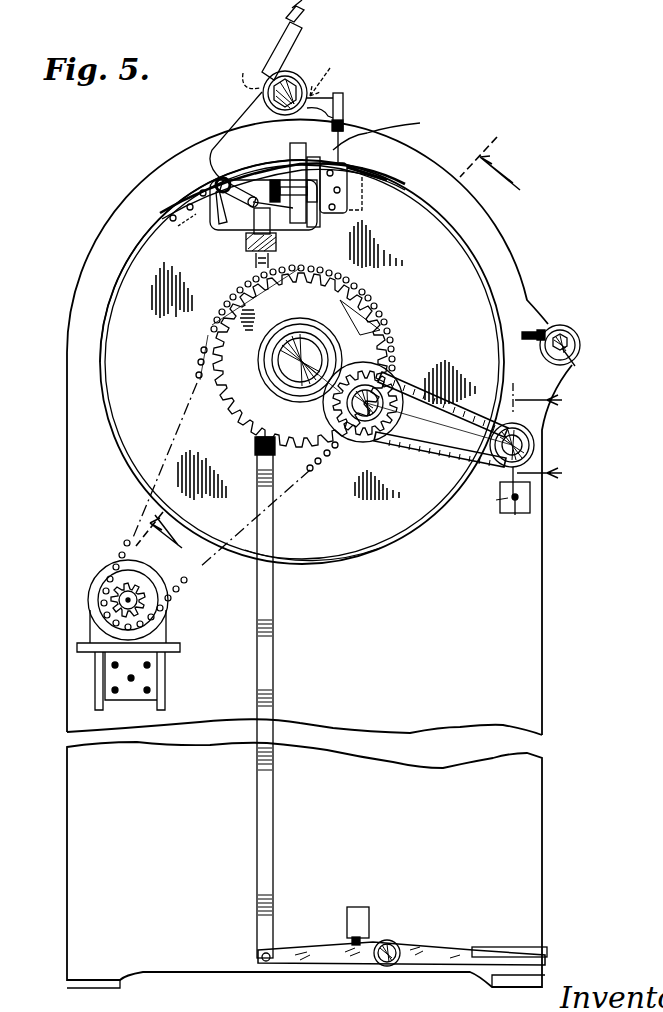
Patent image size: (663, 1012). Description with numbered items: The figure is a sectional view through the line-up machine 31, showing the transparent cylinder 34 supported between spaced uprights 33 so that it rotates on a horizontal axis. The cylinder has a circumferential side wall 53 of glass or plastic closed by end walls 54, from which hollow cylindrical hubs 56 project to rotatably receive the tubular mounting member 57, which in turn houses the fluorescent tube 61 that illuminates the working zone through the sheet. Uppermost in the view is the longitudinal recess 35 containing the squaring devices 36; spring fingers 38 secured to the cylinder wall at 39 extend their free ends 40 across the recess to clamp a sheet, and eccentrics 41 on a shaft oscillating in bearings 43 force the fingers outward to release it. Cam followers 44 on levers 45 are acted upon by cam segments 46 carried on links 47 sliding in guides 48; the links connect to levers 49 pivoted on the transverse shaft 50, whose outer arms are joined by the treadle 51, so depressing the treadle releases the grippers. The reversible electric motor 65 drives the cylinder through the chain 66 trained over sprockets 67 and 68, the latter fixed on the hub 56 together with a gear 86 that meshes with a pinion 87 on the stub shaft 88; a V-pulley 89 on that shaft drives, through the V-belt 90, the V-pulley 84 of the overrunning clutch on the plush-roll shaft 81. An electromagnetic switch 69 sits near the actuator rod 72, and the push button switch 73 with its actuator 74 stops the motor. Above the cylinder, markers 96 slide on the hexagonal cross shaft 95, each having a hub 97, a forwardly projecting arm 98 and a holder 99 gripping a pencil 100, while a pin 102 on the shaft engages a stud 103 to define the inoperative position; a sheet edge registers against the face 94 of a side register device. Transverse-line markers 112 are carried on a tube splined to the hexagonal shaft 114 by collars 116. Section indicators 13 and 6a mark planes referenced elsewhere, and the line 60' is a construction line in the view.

The section line 13 is at (551, 443).
The line-up machine 31 is at (522, 238).
The uprights 33 is at (67, 350).
The cylinder 34 is at (110, 286).
The longitudinal recess 35 is at (252, 175).
The squaring devices 36 is at (314, 160).
The spring fingers 38 is at (218, 178).
The securing point of spring fingers 39 is at (172, 198).
The free ends of spring fingers 40 is at (345, 190).
The eccentrics 41 is at (226, 182).
The bearings 43 is at (218, 198).
The cam followers 44 is at (252, 212).
The levers 45 is at (278, 178).
The cam segments 46 is at (316, 208).
The links 47 is at (252, 270).
The guides 48 is at (280, 246).
The levers 49 is at (420, 945).
The transverse shaft 50 is at (390, 966).
The treadle 51 is at (512, 945).
The circumferential side wall 53 is at (400, 545).
The end walls 54 is at (375, 548).
The hollow cylindrical hubs 56 is at (268, 372).
The tubular mounting member 57 is at (308, 330).
The gear center line 60' is at (321, 398).
The fluorescent tube 61 is at (292, 320).
The reversible electric motor 65 is at (96, 580).
The chain 66 is at (200, 368).
The sprocket 67 is at (142, 588).
The sprocket 68 is at (356, 312).
The electromagnetic switch 69 is at (500, 502).
The actuator rod 72 is at (516, 514).
The push button switch 73 is at (358, 908).
The actuator 74 is at (362, 940).
The shaft 81 is at (503, 484).
The V-pulley 84 is at (540, 446).
The gear 86 is at (372, 326).
The pinion 87 is at (370, 438).
The stub shaft 88 is at (384, 420).
The V-pulley 89 is at (392, 372).
The V-belt 90 is at (415, 470).
The face of side register device 94 is at (363, 147).
The cross shaft 95 is at (300, 78).
The markers 96 is at (370, 66).
The hub 97 is at (284, 62).
The arm 98 is at (340, 92).
The holder 99 is at (342, 110).
The pencil 100 is at (372, 124).
The pin 102 is at (339, 71).
The stud 103 is at (235, 70).
The markers 112 is at (552, 318).
The hexagonal shaft 114 is at (578, 365).
The collar 116 is at (580, 346).
The section line 6a is at (323, 342).